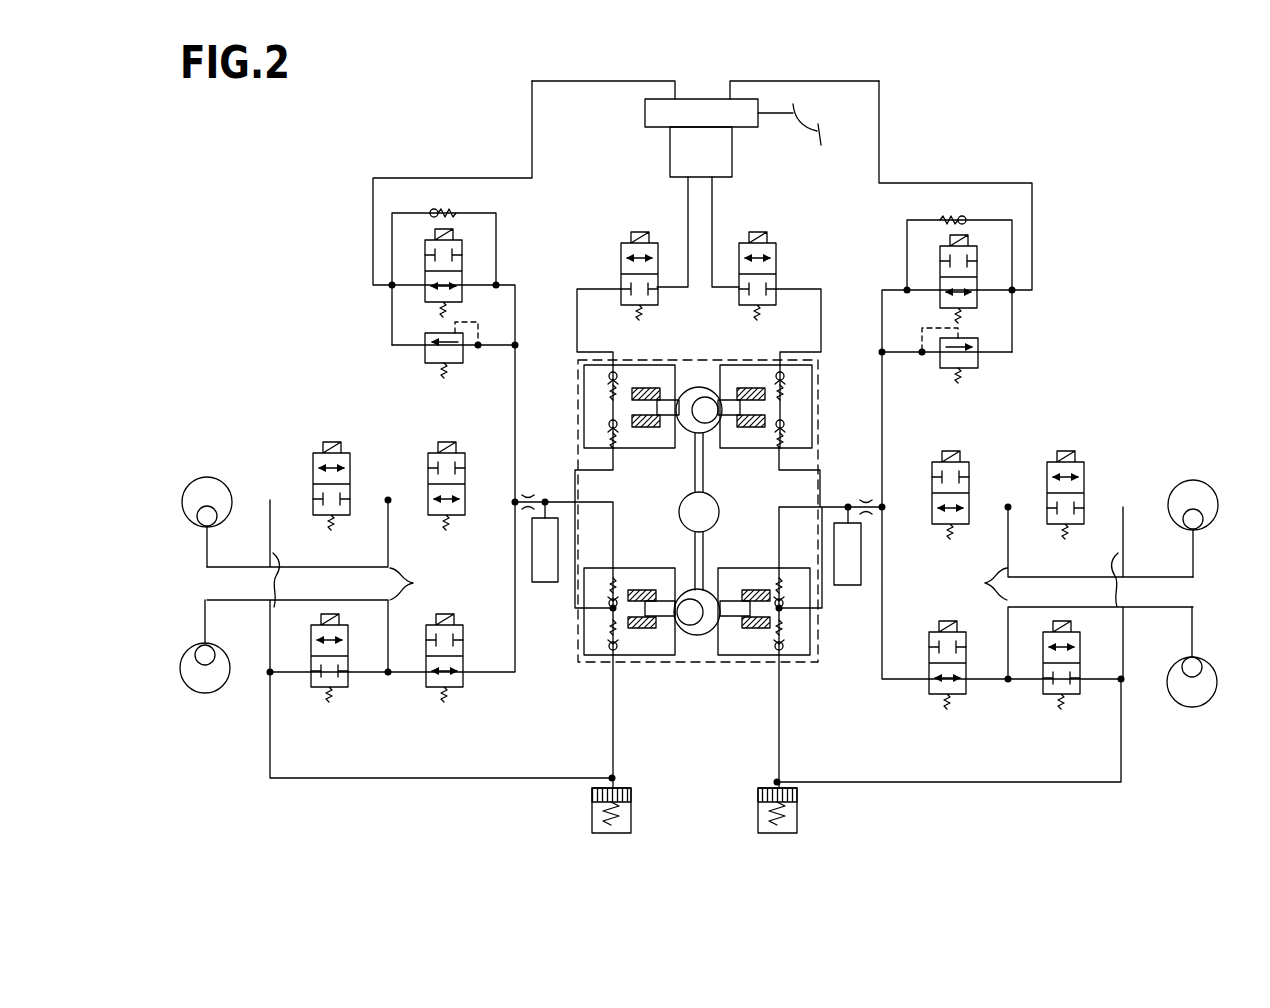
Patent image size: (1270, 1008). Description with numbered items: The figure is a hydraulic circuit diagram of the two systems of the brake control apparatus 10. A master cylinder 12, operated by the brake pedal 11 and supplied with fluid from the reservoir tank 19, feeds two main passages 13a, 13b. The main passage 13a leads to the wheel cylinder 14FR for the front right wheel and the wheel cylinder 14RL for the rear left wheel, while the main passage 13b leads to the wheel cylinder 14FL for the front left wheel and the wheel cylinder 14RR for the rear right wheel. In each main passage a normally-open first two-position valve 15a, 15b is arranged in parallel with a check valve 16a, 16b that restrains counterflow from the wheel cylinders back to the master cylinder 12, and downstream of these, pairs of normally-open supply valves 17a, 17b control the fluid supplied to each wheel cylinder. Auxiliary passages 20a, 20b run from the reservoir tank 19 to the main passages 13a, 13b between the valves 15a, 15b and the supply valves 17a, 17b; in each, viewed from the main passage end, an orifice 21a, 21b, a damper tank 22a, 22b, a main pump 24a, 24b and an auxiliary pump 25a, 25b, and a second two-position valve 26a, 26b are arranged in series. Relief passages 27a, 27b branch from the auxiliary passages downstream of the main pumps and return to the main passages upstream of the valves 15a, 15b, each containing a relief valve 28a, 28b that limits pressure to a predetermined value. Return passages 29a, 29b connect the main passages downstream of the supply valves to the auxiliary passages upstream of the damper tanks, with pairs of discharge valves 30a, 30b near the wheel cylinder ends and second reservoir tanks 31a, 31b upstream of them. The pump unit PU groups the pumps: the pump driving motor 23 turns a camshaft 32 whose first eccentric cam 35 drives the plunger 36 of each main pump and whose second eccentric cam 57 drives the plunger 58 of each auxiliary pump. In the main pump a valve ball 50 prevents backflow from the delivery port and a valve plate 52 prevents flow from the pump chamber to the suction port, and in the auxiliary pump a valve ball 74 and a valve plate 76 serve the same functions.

The brake control apparatus 10 is at (490, 98).
The brake pedal 11 is at (814, 128).
The master cylinder 12 is at (705, 100).
The main passage 13a is at (532, 137).
The main passage 13b is at (882, 135).
The wheel cylinder 14FR is at (206, 477).
The wheel cylinder 14FL is at (1197, 480).
The wheel cylinder 14RL is at (205, 693).
The wheel cylinder 14RR is at (1193, 707).
The first two-position valve 15a is at (422, 253).
The first two-position valve 15b is at (980, 263).
The check valve 16a is at (442, 206).
The check valve 16b is at (962, 216).
The supply valve 17a is at (428, 450).
The supply valve 17b is at (970, 462).
The reservoir tank 19 is at (672, 150).
The auxiliary passage 20a is at (688, 200).
The auxiliary passage 20b is at (712, 200).
The orifice 21a is at (526, 494).
The orifice 21b is at (870, 496).
The damper tank 22a is at (538, 572).
The damper tank 22b is at (848, 578).
The pump driving motor 23 is at (678, 514).
The main pump 24a is at (645, 660).
The main pump 24b is at (746, 660).
The auxiliary pump 25a is at (630, 363).
The auxiliary pump 25b is at (822, 342).
The second two-position valve 26a is at (619, 249).
The second two-position valve 26b is at (780, 255).
The relief passage 27a is at (392, 318).
The relief passage 27b is at (1012, 324).
The relief valve 28a is at (422, 354).
The relief valve 28b is at (981, 360).
The return passage 29a is at (437, 778).
The return passage 29b is at (965, 783).
The discharge valve 30a is at (313, 449).
The discharge valve 30b is at (1085, 462).
The second reservoir tank 31a is at (590, 815).
The second reservoir tank 31b is at (797, 822).
The camshaft 32 is at (704, 471).
The first eccentric cam 35 is at (699, 640).
The plunger 36 is at (662, 596).
The valve ball 50 is at (614, 586).
The valve plate 52 is at (606, 647).
The second eccentric cam 57 is at (704, 405).
The plunger 58 is at (667, 397).
The valve ball 74 is at (608, 424).
The valve plate 76 is at (608, 377).
The pump unit PU is at (694, 355).